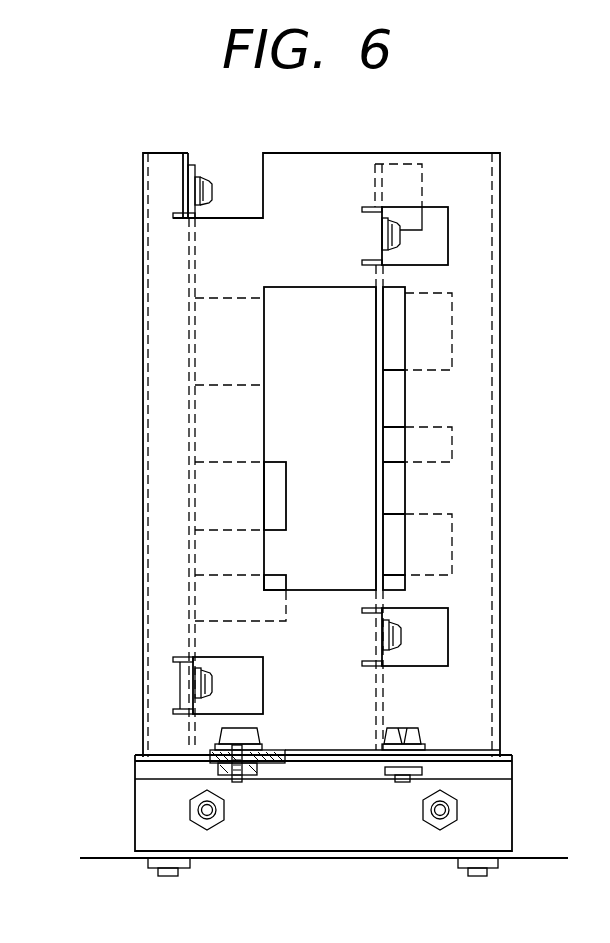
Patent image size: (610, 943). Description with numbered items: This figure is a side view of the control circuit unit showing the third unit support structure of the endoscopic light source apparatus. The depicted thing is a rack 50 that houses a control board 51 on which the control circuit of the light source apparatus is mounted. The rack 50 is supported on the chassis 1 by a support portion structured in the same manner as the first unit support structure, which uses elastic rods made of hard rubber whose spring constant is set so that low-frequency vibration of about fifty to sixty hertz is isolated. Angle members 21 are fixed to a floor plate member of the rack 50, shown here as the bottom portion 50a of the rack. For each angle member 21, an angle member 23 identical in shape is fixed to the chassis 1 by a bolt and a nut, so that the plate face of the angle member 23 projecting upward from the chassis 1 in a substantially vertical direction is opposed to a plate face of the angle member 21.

The chassis 1 is at (538, 857).
The angle member 21 is at (135, 760).
The angle member 23 is at (135, 812).
The rack 50 is at (143, 372).
The bottom plate of column 50a is at (330, 748).
The control board 51 is at (383, 345).